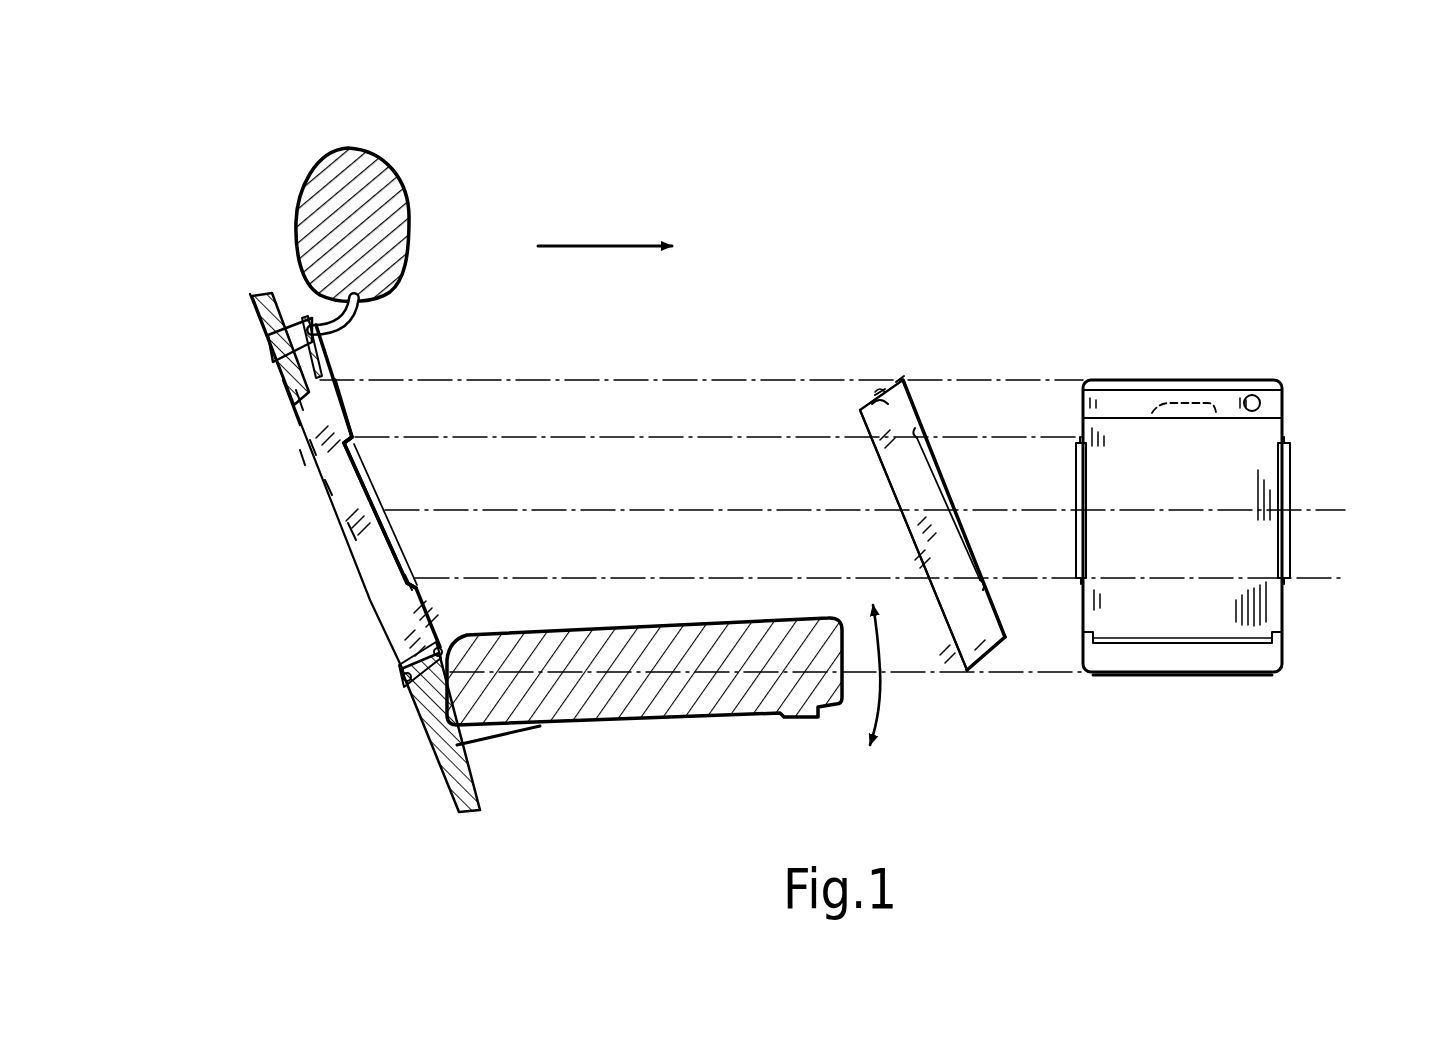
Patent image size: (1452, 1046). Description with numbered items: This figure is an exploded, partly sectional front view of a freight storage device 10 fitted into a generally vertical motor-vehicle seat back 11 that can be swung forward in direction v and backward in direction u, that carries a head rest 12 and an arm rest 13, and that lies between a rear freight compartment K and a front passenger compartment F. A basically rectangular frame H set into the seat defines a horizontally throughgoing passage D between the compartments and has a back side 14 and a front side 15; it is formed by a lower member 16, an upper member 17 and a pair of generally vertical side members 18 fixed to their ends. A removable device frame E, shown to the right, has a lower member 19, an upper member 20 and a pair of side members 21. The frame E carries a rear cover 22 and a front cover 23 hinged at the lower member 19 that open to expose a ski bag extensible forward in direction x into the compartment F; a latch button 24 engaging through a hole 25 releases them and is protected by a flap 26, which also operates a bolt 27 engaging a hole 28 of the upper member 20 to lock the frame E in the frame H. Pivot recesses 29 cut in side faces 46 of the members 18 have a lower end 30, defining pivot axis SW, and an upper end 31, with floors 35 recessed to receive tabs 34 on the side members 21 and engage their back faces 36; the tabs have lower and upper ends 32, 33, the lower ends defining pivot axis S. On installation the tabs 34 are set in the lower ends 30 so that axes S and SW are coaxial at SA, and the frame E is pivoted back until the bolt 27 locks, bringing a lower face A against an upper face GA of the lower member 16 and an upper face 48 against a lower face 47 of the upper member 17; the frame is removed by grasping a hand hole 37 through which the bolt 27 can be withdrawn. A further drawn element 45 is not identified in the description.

The freight storage device 10 is at (815, 245).
The motor-vehicle seat back 11 is at (228, 325).
The head rest 12 is at (408, 184).
The arm rest 13 is at (705, 735).
The back side 14 is at (363, 593).
The front side 15 is at (354, 415).
The lower member 16 is at (401, 631).
The upper member 17 is at (300, 412).
The side members 18 is at (324, 490).
The lower member 19 is at (1248, 680).
The upper member 20 is at (856, 408).
The side members 21 is at (878, 462).
The rear cover 22 is at (912, 540).
The front cover 23 is at (931, 428).
The latch button 24 is at (1262, 402).
The hole 25 is at (1253, 412).
The flap 26 is at (1158, 384).
The bolt 27 is at (885, 398).
The hole 28 is at (318, 392).
The pivot recesses 29 is at (383, 482).
The lower end 30 is at (420, 570).
The upper end 31 is at (361, 446).
The lower end 32 is at (985, 584).
The upper end 33 is at (925, 430).
The tabs 34 is at (955, 476).
The floors 35 is at (399, 530).
The back faces 36 is at (925, 482).
The hand hole 37 is at (1183, 417).
The recess 45 is at (352, 530).
The side faces 46 is at (876, 400).
The lower face 47 is at (312, 460).
The upper face 48 is at (905, 385).
The frame H is at (284, 423).
The passage D is at (298, 459).
The rear freight compartment K is at (232, 630).
The front passenger compartment F is at (598, 470).
The device frame E is at (800, 410).
The lower face A is at (1213, 680).
The pivot axis S is at (969, 591).
The coaxial axis position SA is at (1296, 576).
The pivot axis SW is at (408, 592).
The upper face GA is at (402, 653).
The forward direction x is at (605, 245).
The backward swing direction u is at (882, 704).
The forward swing direction v is at (883, 644).